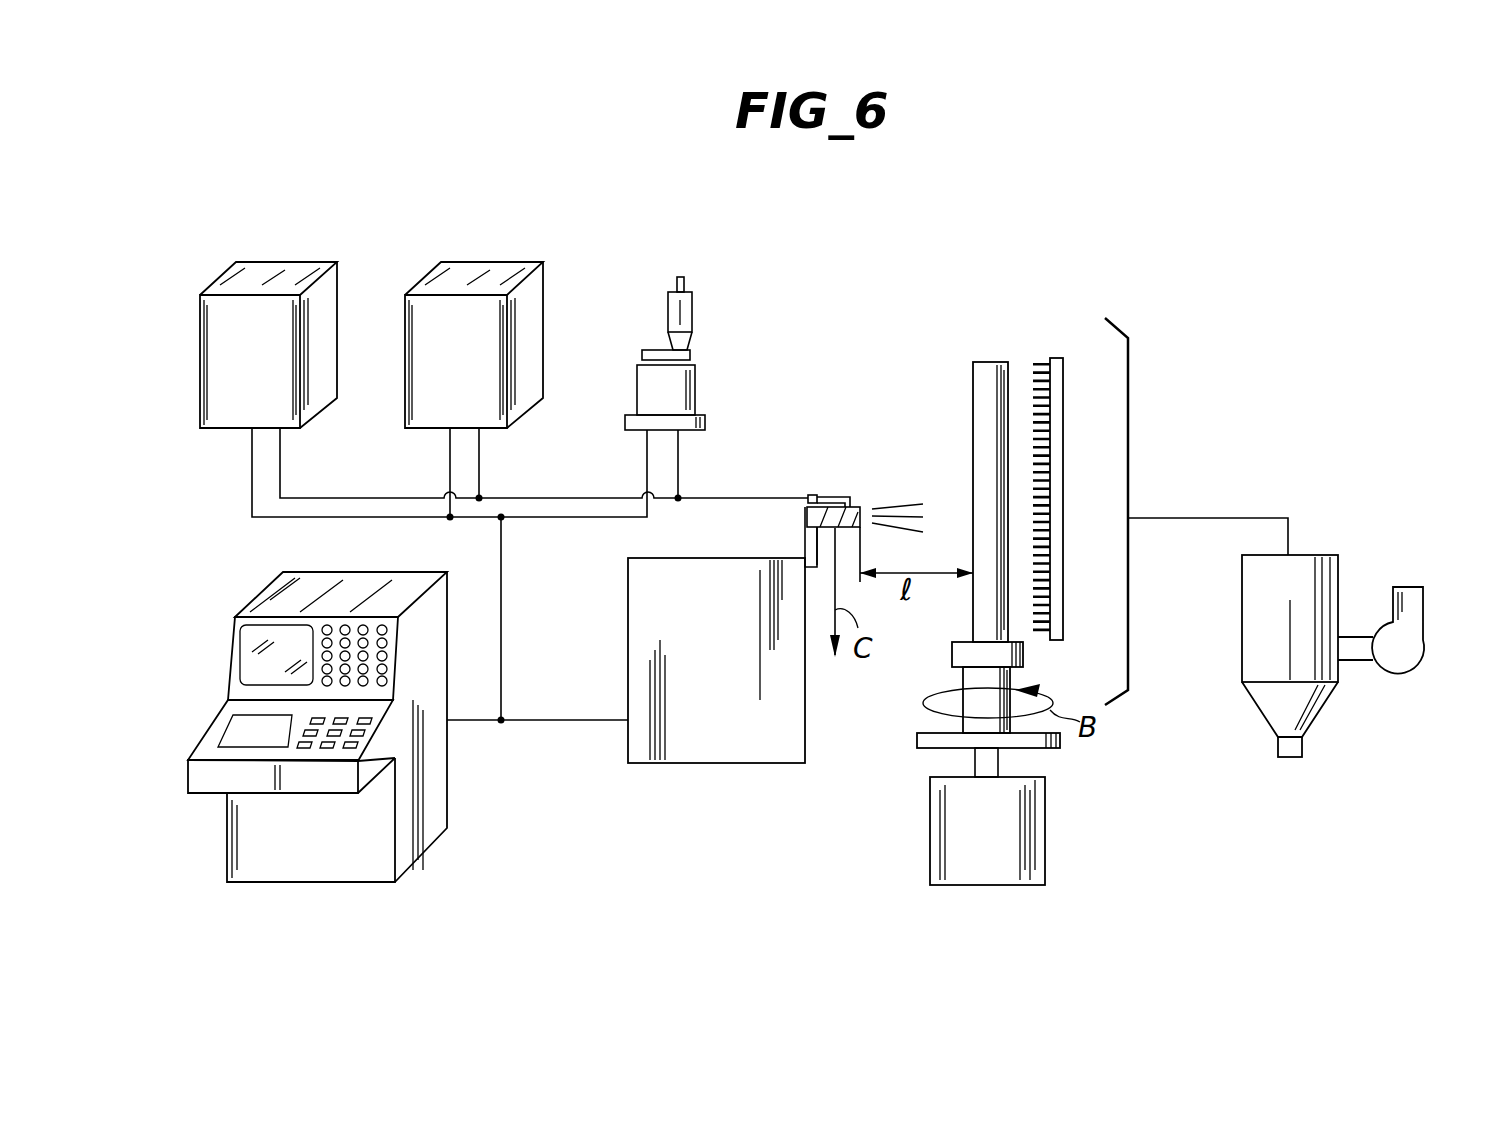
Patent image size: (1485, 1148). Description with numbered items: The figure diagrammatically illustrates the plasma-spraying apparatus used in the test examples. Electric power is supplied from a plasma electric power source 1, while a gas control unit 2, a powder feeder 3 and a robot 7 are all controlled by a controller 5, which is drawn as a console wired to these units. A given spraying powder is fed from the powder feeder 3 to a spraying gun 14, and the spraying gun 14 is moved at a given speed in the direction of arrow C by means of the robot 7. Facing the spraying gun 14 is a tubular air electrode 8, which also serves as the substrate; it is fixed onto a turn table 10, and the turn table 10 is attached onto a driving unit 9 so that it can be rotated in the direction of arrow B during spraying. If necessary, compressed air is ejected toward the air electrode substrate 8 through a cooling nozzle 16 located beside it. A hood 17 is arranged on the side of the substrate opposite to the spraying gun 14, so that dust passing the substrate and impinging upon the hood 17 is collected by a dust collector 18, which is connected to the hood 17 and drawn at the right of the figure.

The plasma electric power source 1 is at (305, 262).
The gas control unit 2 is at (488, 262).
The powder feeder 3 is at (693, 305).
The controller 5 is at (325, 862).
The robot 7 is at (722, 742).
The tubular air electrode 8 is at (990, 365).
The driving unit 9 is at (1040, 827).
The turn table 10 is at (933, 747).
The spraying gun 14 is at (836, 493).
The cooling nozzle 16 is at (1062, 358).
The hood 17 is at (1128, 408).
The dust collector 18 is at (1250, 643).